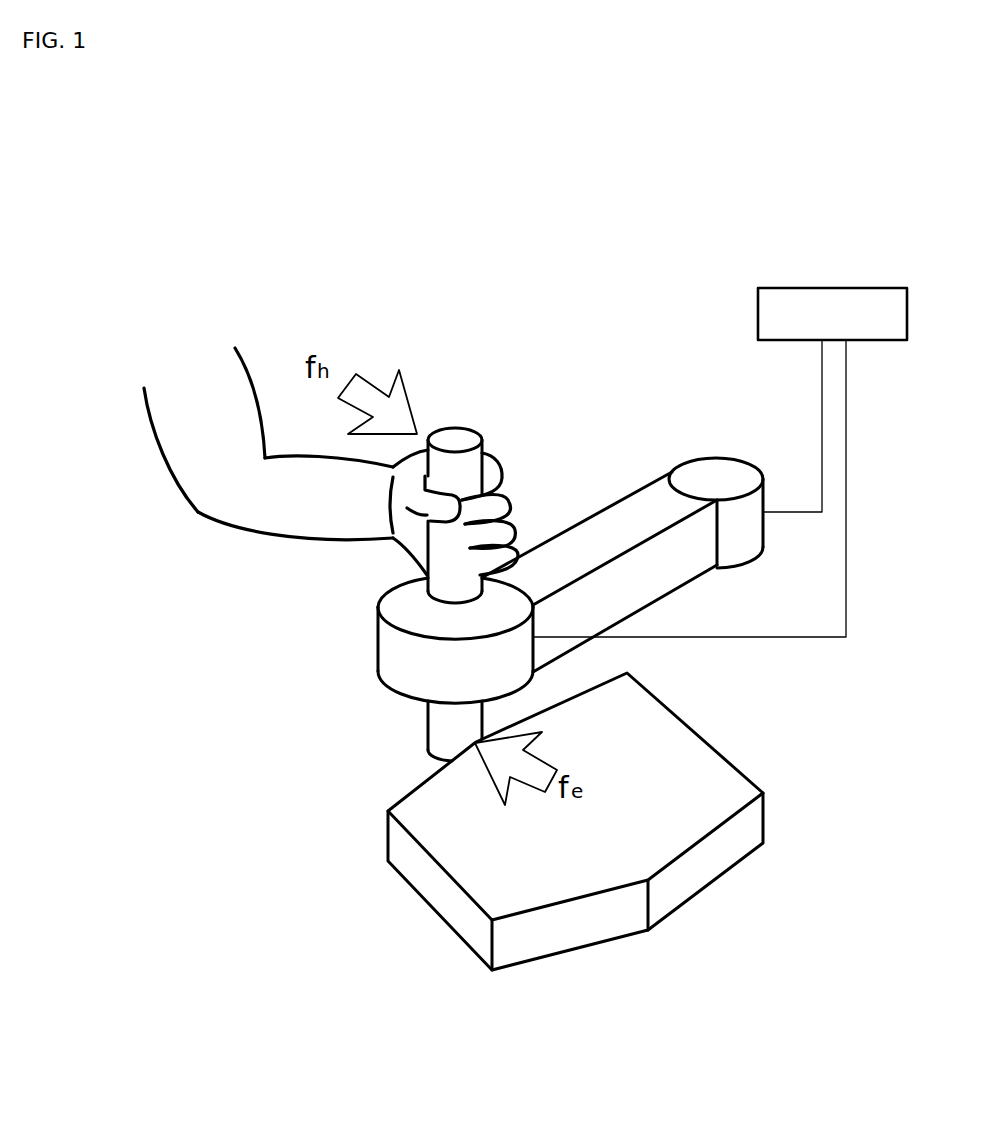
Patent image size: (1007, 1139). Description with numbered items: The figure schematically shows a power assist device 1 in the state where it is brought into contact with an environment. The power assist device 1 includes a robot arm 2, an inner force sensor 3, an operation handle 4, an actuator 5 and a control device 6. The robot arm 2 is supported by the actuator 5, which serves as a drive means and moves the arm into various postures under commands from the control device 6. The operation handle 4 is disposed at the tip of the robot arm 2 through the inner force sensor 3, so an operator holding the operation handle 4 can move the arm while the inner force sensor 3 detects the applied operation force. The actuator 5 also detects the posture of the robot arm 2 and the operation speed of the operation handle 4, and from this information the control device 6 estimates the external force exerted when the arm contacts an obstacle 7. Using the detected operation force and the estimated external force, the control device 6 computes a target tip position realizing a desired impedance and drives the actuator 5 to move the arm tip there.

The power assist device 1 is at (573, 372).
The robot arm 2 is at (627, 492).
The inner force sensor 3 is at (378, 637).
The operation handle 4 is at (452, 428).
The actuator 5 is at (745, 460).
The control device 6 is at (831, 288).
The obstacle 7 is at (560, 930).